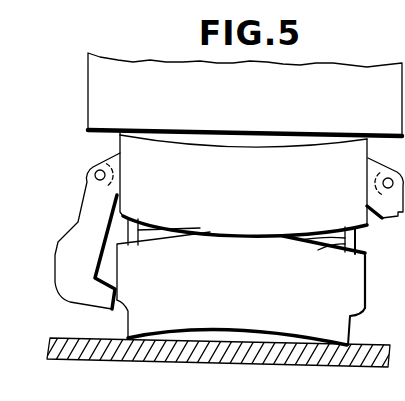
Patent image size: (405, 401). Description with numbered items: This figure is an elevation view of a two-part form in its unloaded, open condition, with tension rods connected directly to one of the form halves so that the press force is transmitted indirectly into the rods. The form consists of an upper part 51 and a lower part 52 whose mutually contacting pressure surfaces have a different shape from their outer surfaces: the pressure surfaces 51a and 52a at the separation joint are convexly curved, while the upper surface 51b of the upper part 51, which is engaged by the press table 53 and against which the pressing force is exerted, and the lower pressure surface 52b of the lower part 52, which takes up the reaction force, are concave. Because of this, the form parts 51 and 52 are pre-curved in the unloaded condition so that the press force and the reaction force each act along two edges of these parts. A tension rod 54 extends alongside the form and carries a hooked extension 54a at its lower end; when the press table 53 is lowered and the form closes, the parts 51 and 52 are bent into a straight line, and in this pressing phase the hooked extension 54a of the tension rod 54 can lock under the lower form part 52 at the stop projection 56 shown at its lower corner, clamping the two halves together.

The upper form part 51 is at (263, 190).
The pressure surface of upper part 51a is at (157, 236).
The upper surface of upper part 51b is at (251, 137).
The lower form part 52 is at (260, 311).
The pressure surface of lower part 52a is at (357, 241).
The lower pressure surface of lower part 52b is at (250, 333).
The press table 53 is at (96, 81).
The tension rod 54 is at (70, 250).
The hooked extension 54a is at (107, 299).
The stop projection 56 is at (128, 313).